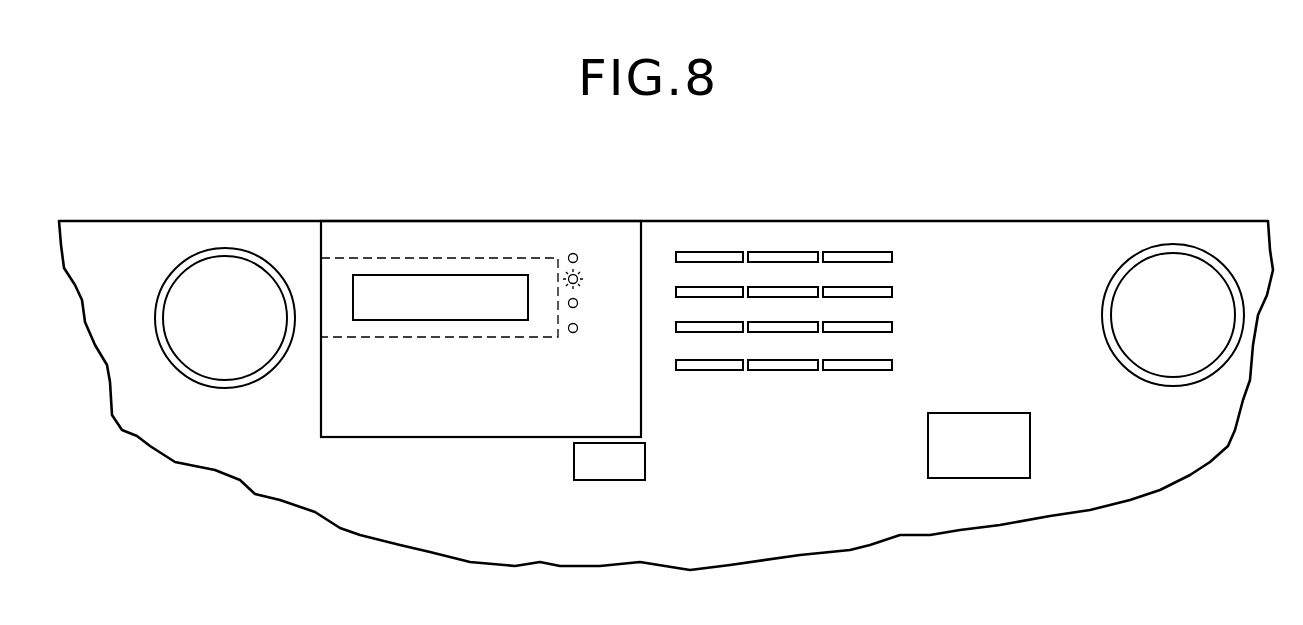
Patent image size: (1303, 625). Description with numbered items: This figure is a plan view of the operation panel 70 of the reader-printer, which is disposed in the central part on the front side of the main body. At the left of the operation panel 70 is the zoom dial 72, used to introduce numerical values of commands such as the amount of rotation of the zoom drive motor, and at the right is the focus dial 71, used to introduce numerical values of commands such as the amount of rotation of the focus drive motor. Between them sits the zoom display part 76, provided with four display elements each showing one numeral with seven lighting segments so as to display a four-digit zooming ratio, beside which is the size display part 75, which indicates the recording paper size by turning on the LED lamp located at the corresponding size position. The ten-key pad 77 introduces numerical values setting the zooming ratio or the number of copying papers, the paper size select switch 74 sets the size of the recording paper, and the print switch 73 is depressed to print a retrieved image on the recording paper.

The operation panel 70 is at (298, 221).
The focus dial 71 is at (1162, 272).
The zoom dial 72 is at (207, 280).
The print switch 73 is at (980, 465).
The paper size select switch 74 is at (605, 475).
The size display part 75 is at (577, 247).
The zoom display part 76 is at (465, 283).
The ten-key pad 77 is at (873, 243).